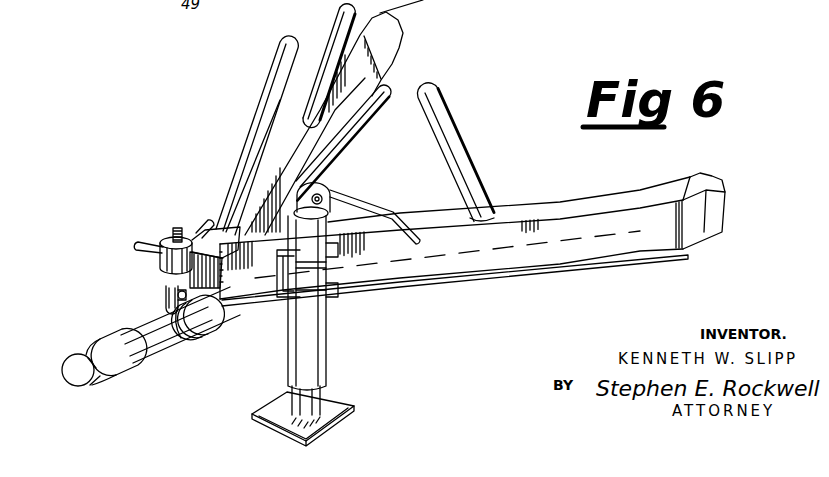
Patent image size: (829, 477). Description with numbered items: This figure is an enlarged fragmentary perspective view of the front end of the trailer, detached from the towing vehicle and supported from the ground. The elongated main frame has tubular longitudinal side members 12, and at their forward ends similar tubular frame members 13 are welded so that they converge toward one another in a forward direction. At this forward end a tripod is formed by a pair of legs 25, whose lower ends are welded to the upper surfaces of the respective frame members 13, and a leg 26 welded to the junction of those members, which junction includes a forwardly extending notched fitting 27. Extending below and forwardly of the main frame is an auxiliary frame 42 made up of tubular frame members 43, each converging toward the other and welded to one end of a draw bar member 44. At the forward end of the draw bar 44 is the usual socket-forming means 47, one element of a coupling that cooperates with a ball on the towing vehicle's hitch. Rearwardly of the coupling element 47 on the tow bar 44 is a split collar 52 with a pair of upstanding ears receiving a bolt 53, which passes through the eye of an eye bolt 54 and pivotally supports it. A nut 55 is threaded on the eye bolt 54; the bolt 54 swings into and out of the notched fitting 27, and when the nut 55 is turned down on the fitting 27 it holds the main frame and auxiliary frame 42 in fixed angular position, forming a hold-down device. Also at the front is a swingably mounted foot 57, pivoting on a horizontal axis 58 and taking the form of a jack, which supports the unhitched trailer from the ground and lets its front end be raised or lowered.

The tubular longitudinal side member 12 is at (720, 197).
The tubular frame member 13 is at (669, 245).
The leg 25 is at (337, 22).
The leg 26 is at (277, 92).
The notched fitting 27 is at (215, 215).
The auxiliary frame 42 is at (494, 283).
The tubular frame member 43 is at (413, 297).
The draw bar member 44 is at (155, 346).
The socket-forming means 47 is at (75, 368).
The split collar 52 is at (206, 336).
The bolt 53 is at (165, 298).
The eye bolt 54 is at (175, 228).
The nut 55 is at (162, 258).
The foot 57 is at (334, 347).
The horizontal axis 58 is at (357, 212).